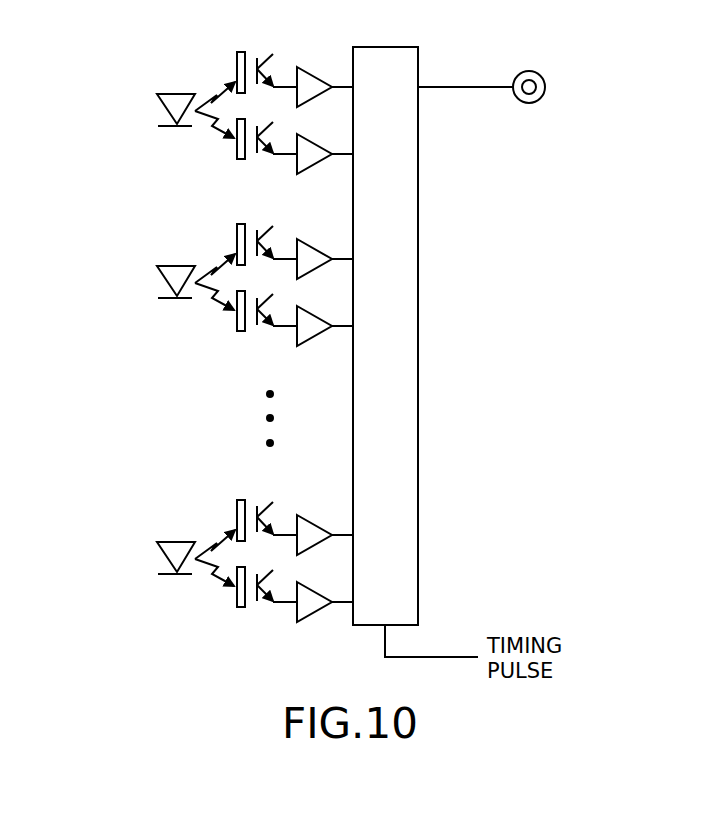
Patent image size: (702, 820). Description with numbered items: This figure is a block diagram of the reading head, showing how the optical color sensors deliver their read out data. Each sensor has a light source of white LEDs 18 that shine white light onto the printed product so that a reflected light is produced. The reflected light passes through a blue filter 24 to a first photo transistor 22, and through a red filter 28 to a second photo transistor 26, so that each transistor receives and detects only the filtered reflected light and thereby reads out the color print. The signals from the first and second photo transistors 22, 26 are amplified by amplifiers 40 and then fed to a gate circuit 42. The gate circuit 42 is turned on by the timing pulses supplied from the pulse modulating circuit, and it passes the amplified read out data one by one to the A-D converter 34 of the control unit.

The white LED 18 is at (169, 335).
The first photo transistor 22 is at (277, 274).
The blue filter 24 is at (213, 288).
The second photo transistor 26 is at (267, 386).
The red filter 28 is at (211, 372).
The A-D converter 34 is at (532, 70).
The amplifier 40 is at (325, 323).
The gate circuit 42 is at (420, 318).